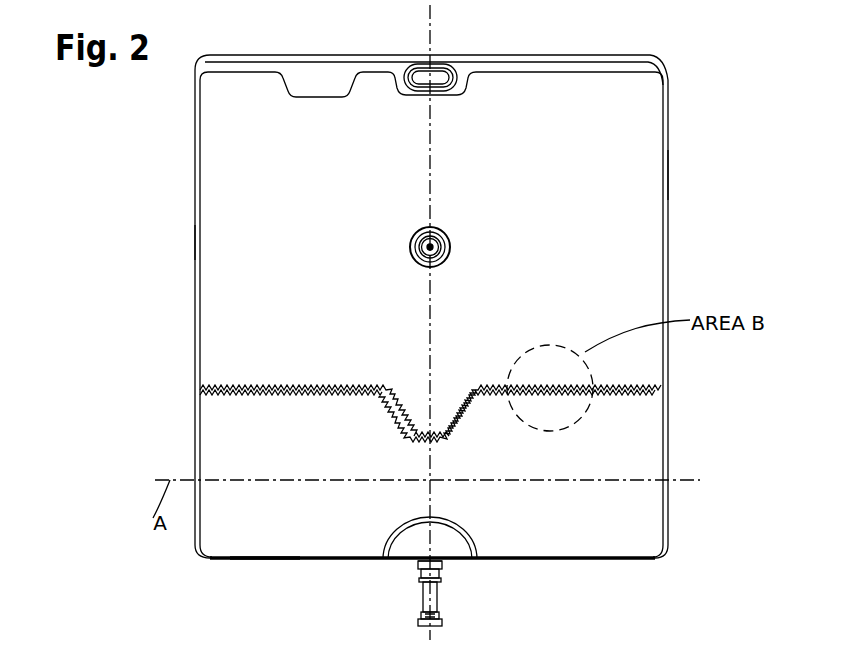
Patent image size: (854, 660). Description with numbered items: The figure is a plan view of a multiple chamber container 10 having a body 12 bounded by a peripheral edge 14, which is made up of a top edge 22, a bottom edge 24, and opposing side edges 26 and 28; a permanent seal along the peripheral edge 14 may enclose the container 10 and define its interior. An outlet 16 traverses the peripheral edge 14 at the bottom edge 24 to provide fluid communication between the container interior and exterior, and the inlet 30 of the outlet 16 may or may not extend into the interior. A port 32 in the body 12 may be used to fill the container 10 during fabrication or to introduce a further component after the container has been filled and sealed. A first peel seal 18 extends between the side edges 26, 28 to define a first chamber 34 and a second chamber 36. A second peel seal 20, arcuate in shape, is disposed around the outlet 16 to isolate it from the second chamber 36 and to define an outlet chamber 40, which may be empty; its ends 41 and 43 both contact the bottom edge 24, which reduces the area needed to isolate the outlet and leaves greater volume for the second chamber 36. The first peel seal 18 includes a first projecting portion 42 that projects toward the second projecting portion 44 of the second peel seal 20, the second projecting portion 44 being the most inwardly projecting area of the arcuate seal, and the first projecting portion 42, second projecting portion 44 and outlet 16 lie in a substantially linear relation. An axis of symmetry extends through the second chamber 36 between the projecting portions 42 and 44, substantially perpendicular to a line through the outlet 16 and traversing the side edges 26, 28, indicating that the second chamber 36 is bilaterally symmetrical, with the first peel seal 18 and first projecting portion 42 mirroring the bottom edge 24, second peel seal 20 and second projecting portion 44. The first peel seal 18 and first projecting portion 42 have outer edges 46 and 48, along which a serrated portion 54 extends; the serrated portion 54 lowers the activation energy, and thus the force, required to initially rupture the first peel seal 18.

The container 10 is at (580, 24).
The body 12 is at (192, 168).
The peripheral edge 14 is at (486, 55).
The outlet 16 is at (440, 588).
The first peel seal 18 is at (320, 397).
The second peel seal 20 is at (400, 542).
The top edge 22 is at (318, 55).
The bottom edge 24 is at (238, 566).
The side edge 26 is at (195, 242).
The side edge 28 is at (670, 183).
The inlet 30 is at (418, 572).
The port 32 is at (451, 246).
The first chamber 34 is at (255, 239).
The second chamber 36 is at (255, 473).
The outlet chamber 40 is at (440, 513).
The end 41 is at (388, 560).
The first projecting portion 42 is at (420, 437).
The end 43 is at (455, 548).
The second projecting portion 44 is at (473, 540).
The outer edge 46 is at (253, 387).
The outer edge 48 is at (258, 396).
The serrated portion 54 is at (372, 384).